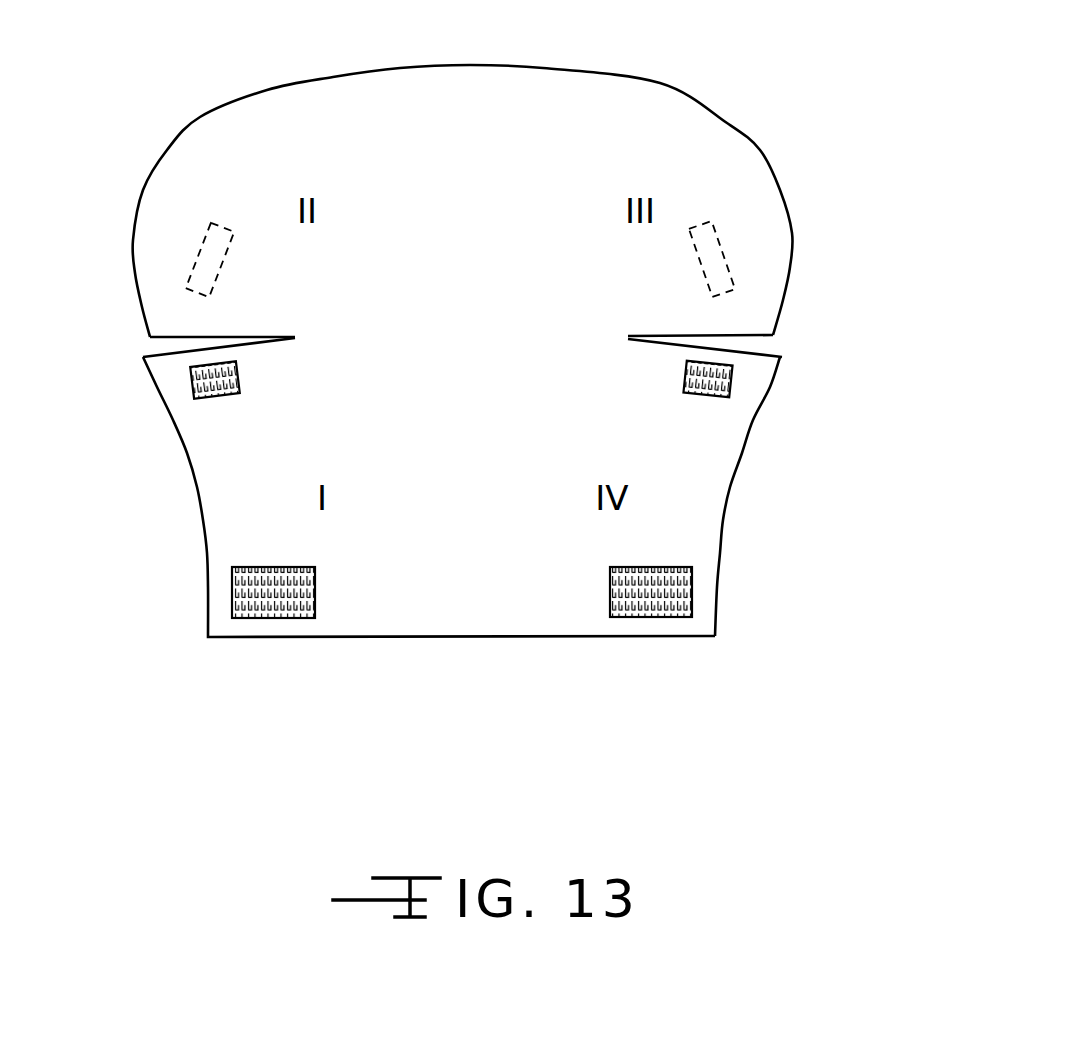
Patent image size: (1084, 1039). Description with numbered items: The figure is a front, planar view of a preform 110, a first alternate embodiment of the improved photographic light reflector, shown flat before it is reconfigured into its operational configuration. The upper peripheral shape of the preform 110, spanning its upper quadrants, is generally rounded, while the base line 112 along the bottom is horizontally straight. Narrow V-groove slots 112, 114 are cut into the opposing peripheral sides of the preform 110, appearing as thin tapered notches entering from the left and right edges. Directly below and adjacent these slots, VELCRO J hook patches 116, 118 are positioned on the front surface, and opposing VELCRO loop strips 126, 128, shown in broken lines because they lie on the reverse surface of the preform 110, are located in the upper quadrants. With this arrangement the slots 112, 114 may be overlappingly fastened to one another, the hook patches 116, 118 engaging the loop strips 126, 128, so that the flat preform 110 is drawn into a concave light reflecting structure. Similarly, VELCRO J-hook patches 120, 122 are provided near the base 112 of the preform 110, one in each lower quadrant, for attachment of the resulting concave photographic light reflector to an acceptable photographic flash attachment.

The preform 110 is at (604, 50).
The V-groove slot 112 is at (157, 352).
The V-groove slot 114 is at (777, 351).
The J hook patch 116 is at (238, 388).
The J hook patch 118 is at (688, 373).
The J-hook patch 120 is at (277, 566).
The J-hook patch 122 is at (670, 597).
The loop strip 126 is at (200, 237).
The loop strip 128 is at (720, 247).